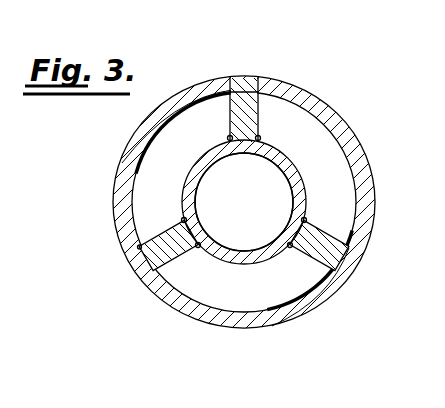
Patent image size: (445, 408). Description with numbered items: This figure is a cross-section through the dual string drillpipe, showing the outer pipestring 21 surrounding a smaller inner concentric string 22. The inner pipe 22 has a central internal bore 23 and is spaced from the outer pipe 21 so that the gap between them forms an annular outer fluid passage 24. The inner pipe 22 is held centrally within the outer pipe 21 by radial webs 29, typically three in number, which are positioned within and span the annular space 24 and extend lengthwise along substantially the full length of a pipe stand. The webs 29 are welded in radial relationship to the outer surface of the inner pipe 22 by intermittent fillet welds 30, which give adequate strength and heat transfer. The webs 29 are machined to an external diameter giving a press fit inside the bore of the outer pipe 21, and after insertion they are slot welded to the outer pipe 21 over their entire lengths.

The outer pipestring 21 is at (354, 131).
The inner concentric string 22 is at (303, 190).
The internal bore 23 is at (252, 238).
The annular outer fluid passage 24 is at (307, 285).
The radial webs 29 is at (260, 110).
The intermittent fillet welds 30 is at (264, 137).